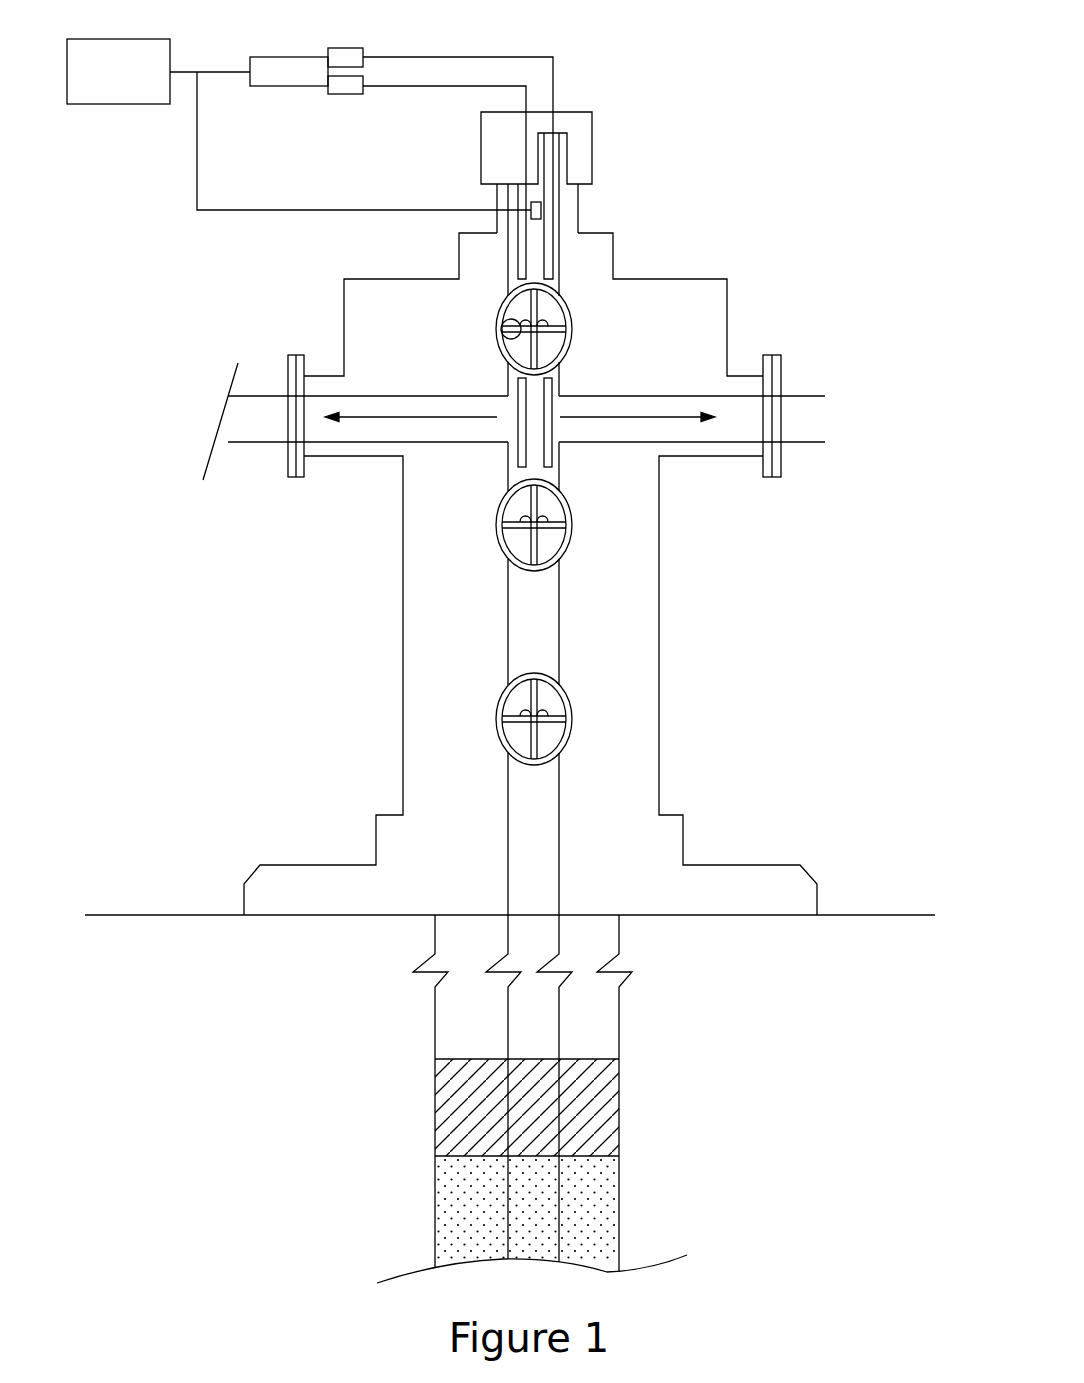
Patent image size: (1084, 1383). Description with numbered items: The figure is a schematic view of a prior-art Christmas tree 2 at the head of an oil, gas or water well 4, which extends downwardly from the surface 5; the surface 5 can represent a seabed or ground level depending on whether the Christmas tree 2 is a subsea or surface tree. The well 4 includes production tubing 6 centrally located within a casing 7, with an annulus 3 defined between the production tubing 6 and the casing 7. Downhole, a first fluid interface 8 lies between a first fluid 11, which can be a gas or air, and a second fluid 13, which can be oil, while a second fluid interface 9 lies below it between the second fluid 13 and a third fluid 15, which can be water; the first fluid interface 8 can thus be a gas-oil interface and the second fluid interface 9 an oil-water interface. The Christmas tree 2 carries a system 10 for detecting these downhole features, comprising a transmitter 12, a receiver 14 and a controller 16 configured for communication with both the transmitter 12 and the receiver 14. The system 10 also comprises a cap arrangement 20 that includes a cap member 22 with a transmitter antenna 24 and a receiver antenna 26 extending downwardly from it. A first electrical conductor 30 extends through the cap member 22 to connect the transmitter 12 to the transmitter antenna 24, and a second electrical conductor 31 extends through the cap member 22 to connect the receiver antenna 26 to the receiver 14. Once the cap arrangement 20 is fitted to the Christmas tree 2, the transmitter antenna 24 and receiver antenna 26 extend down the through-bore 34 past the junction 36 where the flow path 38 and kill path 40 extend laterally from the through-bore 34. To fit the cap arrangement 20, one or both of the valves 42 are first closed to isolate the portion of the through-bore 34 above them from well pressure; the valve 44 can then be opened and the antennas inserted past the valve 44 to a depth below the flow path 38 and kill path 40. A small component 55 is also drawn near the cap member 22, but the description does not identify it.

The Christmas tree 2 is at (200, 637).
The annulus 3 is at (472, 1025).
The well 4 is at (492, 1147).
The surface 5 is at (857, 915).
The production tubing 6 is at (507, 1180).
The casing 7 is at (435, 1240).
The first fluid interface 8 is at (582, 1060).
The second fluid interface 9 is at (588, 1156).
The system 10 is at (218, 283).
The first fluid 11 is at (595, 1016).
The transmitter 12 is at (340, 47).
The second fluid 13 is at (588, 1106).
The receiver 14 is at (345, 95).
The third fluid 15 is at (588, 1225).
The controller 16 is at (120, 105).
The cap arrangement 20 is at (670, 172).
The cap member 22 is at (592, 145).
The transmitter antenna 24 is at (559, 258).
The receiver antenna 26 is at (518, 263).
The first electrical conductor 30 is at (508, 57).
The second electrical conductor 31 is at (420, 86).
The through-bore 34 is at (527, 628).
The junction 36 is at (535, 413).
The flow path 38 is at (387, 430).
The kill path 40 is at (702, 430).
The valves 42 is at (572, 527).
The valve 44 is at (572, 345).
The connector 55 is at (541, 210).